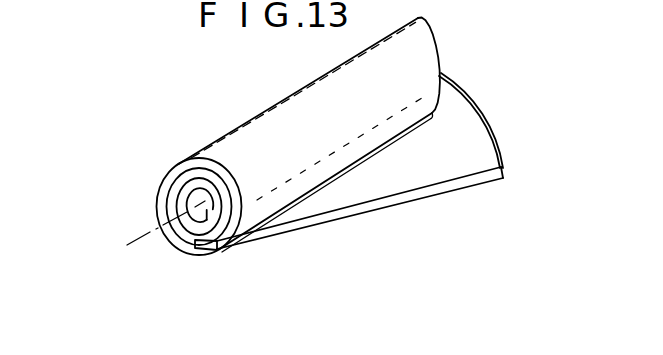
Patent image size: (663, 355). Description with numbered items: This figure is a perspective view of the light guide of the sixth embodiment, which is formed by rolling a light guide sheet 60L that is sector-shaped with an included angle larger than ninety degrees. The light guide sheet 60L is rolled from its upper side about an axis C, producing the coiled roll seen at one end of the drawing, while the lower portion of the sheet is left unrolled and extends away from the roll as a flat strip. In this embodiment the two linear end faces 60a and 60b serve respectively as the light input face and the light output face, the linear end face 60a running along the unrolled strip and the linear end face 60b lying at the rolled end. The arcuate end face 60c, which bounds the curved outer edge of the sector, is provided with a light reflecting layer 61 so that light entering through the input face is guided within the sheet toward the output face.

The light guide sheet 60L is at (211, 119).
The linear end face 60a is at (387, 208).
The linear end face 60b is at (196, 250).
The arcuate end face 60c is at (483, 103).
The light reflecting layer 61 is at (472, 93).
The axis C is at (137, 230).